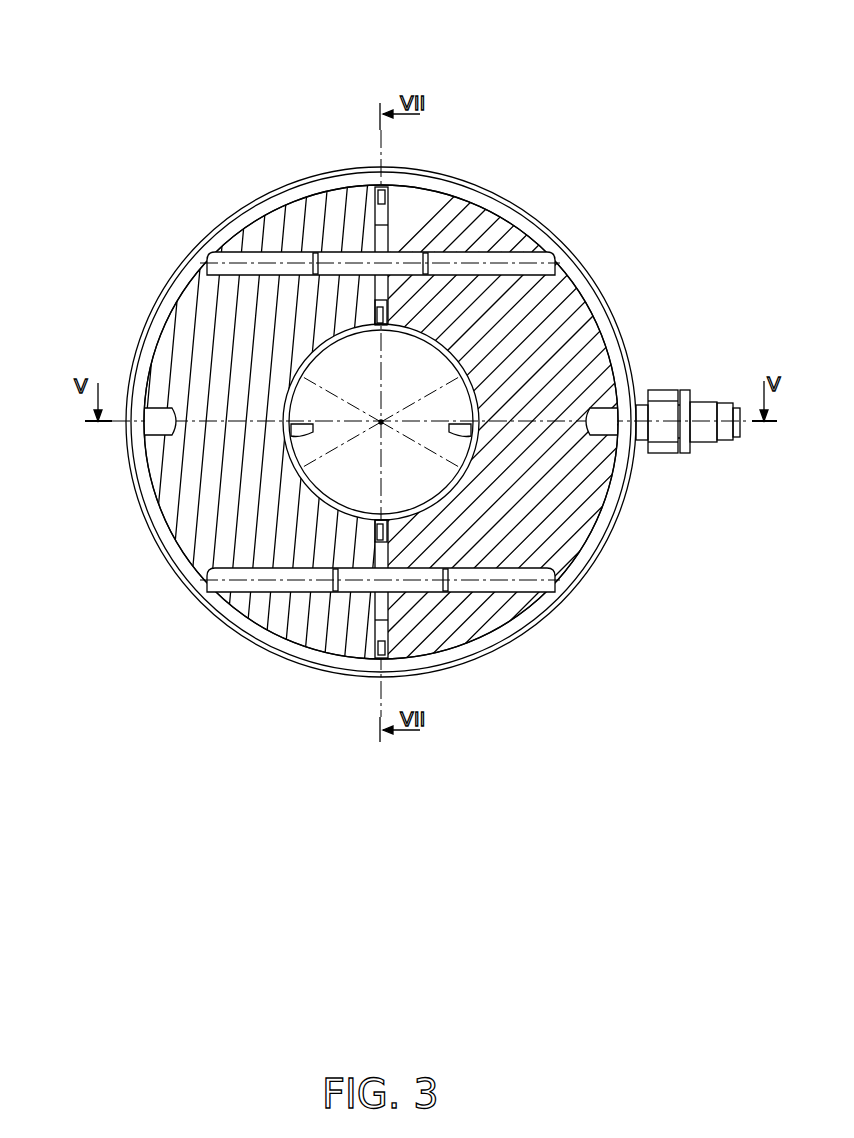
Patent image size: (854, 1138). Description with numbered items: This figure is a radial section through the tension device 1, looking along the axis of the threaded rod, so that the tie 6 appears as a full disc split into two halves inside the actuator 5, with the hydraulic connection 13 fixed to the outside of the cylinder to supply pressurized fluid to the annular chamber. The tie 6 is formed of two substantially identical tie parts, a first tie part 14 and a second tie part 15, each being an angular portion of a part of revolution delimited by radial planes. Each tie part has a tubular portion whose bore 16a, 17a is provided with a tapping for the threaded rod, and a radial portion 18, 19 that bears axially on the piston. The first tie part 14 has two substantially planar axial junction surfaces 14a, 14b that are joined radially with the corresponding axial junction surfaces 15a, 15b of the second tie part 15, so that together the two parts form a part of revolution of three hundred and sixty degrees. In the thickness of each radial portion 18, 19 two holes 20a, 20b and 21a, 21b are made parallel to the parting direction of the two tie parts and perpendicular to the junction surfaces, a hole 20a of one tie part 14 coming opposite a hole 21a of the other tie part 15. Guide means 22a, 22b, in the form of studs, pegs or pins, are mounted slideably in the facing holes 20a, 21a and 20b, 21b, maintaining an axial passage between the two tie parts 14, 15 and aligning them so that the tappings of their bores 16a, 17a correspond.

The tension device 1 is at (533, 62).
The actuator 5 is at (627, 348).
The tie 6 is at (585, 293).
The hydraulic connection 13 is at (706, 404).
The first tie part 14 is at (185, 521).
The axial junction surface 14a is at (373, 660).
The axial junction surface 14b is at (373, 187).
The second tie part 15 is at (585, 525).
The axial junction surface 15a is at (387, 620).
The axial junction surface 15b is at (388, 210).
The bore 16a is at (290, 433).
The bore 17a is at (472, 433).
The radial portion 18 is at (175, 326).
The radial portion 19 is at (590, 322).
The hole 20a is at (215, 582).
The hole 20b is at (221, 262).
The hole 21a is at (549, 582).
The hole 21b is at (549, 265).
The guide means 22a is at (338, 597).
The guide means 22b is at (337, 240).